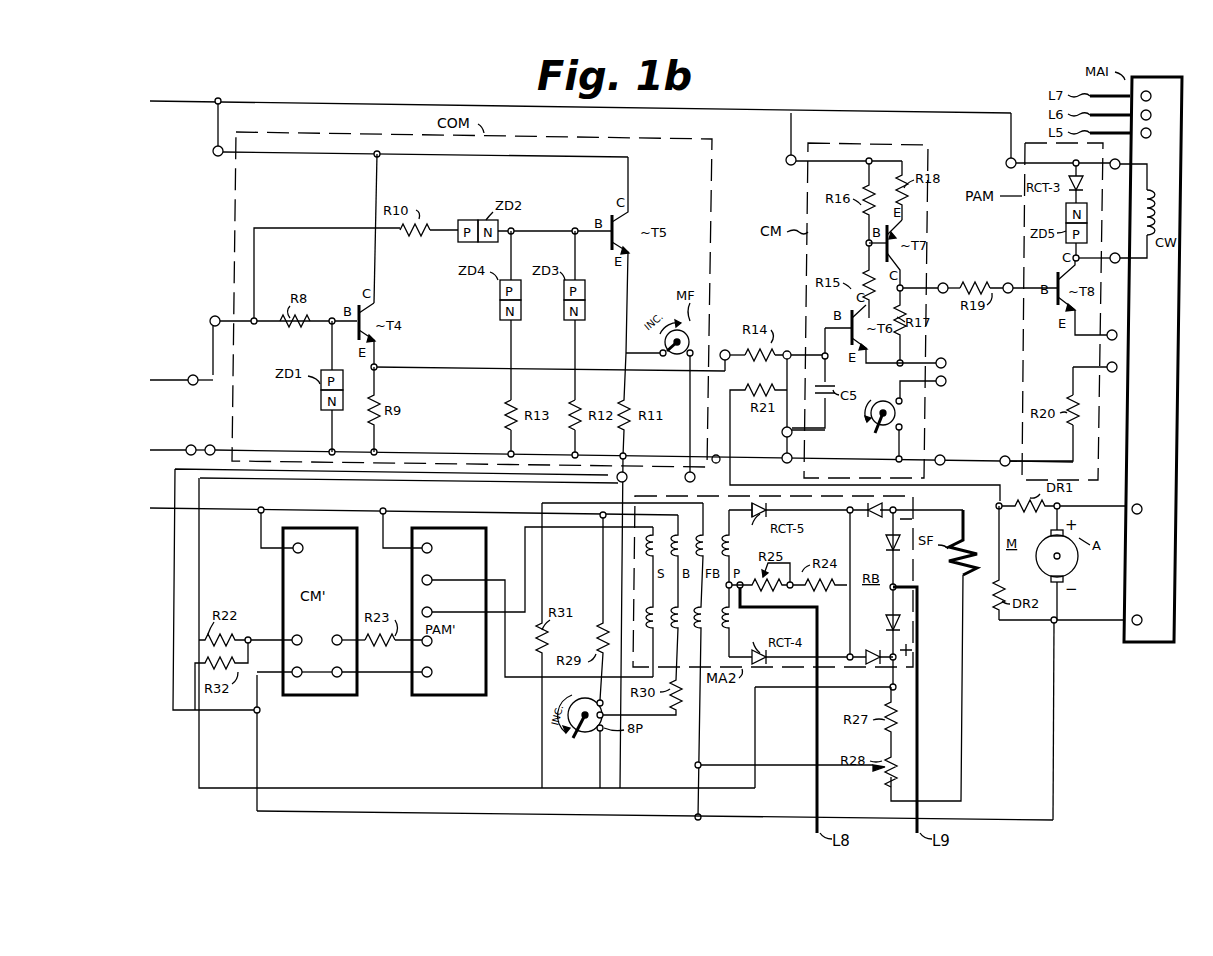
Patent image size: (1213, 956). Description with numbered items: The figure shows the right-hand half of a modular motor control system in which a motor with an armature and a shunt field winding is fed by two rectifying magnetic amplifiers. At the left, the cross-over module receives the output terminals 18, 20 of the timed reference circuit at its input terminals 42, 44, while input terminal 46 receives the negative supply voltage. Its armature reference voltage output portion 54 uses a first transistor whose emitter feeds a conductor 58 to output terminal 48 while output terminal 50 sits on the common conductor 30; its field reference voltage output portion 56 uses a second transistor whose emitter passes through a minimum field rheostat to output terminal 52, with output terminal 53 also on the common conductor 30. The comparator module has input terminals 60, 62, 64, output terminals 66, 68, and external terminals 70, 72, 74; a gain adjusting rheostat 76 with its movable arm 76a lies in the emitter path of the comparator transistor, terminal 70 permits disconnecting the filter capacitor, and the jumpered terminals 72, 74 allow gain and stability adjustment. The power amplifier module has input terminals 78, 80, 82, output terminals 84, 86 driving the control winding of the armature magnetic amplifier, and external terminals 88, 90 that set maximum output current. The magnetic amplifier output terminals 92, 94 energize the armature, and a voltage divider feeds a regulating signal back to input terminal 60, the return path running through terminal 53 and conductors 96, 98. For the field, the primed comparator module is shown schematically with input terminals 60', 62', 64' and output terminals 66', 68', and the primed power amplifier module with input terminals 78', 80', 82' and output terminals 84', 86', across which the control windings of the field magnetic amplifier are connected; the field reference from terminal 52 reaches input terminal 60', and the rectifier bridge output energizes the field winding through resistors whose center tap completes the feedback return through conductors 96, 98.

The output terminal of timed reference circuit 18 is at (198, 376).
The output terminal of timed reference circuit 20 is at (188, 454).
The common conductor 30 is at (433, 447).
The control voltage input terminal 42 is at (210, 321).
The common reference potential input terminal 44 is at (215, 447).
The supply voltage input terminal 46 is at (213, 152).
The output terminal 48 is at (726, 344).
The output terminal 50 is at (719, 462).
The output terminal 52 is at (685, 480).
The output terminal 53 is at (618, 471).
The armature reference voltage output portion 54 is at (312, 255).
The field reference voltage output portion 56 is at (569, 193).
The conductor 58 is at (446, 365).
The input terminal 60 is at (804, 378).
The input terminal 62 is at (771, 451).
The input terminal 64 is at (826, 141).
The output terminal 66 is at (931, 276).
The output terminal 68 is at (948, 451).
The external terminal 70 is at (779, 434).
The external terminal 72 is at (946, 386).
The external terminal 74 is at (946, 358).
The gain adjusting rheostat 76 is at (887, 395).
The movable arm of rheostat 76a is at (878, 433).
The input terminal 78 is at (1026, 277).
The input terminal 80 is at (1027, 445).
The input terminal 82 is at (1039, 142).
The output terminal 84 is at (1113, 260).
The output terminal 86 is at (1123, 176).
The external terminal 88 is at (1112, 372).
The external terminal 90 is at (1112, 330).
The output terminal of magnetic amplifier 92 is at (1138, 492).
The output terminal of magnetic amplifier 94 is at (1139, 615).
The conductor 96 is at (173, 571).
The conductor 98 is at (391, 810).
The input terminal 64' is at (297, 542).
The input terminal 82' is at (425, 533).
The output terminal 86' is at (531, 620).
The output terminal 84' is at (531, 572).
The input terminal 60' is at (278, 630).
The output terminal 66' is at (346, 630).
The input terminal 78' is at (442, 651).
The input terminal 62' is at (280, 686).
The output terminal 68' is at (362, 686).
The input terminal 80' is at (444, 680).